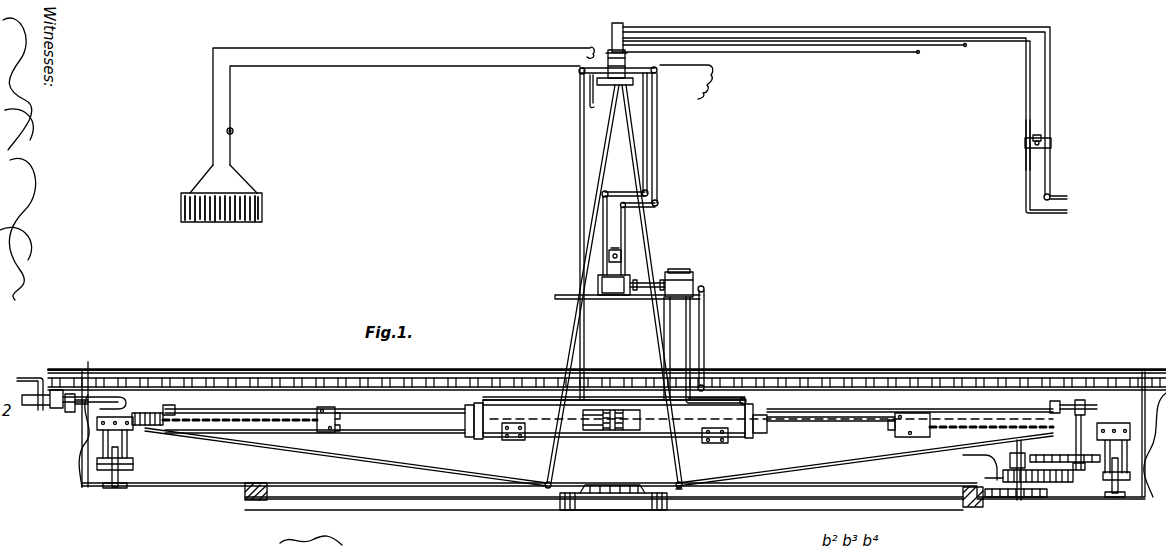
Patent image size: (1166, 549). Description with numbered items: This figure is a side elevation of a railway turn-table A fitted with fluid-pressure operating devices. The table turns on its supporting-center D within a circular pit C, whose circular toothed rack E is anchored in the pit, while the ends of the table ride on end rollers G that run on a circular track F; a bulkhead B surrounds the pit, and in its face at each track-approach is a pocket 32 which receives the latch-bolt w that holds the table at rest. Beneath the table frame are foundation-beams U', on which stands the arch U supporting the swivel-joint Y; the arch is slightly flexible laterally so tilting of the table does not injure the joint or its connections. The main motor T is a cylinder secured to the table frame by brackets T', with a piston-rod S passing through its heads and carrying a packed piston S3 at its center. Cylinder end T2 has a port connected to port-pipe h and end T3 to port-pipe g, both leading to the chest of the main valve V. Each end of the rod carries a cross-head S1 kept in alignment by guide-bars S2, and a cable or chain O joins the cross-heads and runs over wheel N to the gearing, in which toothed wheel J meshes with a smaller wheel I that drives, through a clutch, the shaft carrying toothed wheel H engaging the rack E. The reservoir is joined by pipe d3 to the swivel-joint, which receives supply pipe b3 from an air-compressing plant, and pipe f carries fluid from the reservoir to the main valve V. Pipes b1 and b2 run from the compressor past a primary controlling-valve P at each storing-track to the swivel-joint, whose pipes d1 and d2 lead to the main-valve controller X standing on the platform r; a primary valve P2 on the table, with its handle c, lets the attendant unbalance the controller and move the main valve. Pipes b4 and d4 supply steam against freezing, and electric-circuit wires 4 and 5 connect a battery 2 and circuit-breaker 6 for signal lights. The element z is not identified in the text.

The battery 2 is at (262, 210).
The electric-circuit wire 4 is at (368, 48).
The electric-circuit wire 5 is at (436, 80).
The circuit-breaker 6 is at (233, 129).
The terminal block z is at (612, 25).
The air pipe b1 is at (1058, 196).
The air pipe b2 is at (1060, 214).
The reservoir supply pipe b3 is at (966, 50).
The steam pipe b4 is at (917, 56).
The valve handle c is at (1038, 135).
The primary controlling-valve P is at (1027, 150).
The primary controlling-valve P2 is at (606, 257).
The swivel-joint pipe d1 is at (657, 148).
The swivel-joint pipe d2 is at (619, 192).
The reservoir pipe d3 is at (580, 151).
The steam pipe d4 is at (590, 101).
The swivel-joint Y is at (612, 88).
The arch U is at (579, 286).
The foundation-beams U' is at (672, 308).
The main-valve controller X is at (609, 290).
The main valve V is at (693, 281).
The platform r is at (553, 295).
The motor supply pipe f is at (706, 325).
The port-pipe g is at (722, 400).
The port-pipe h is at (495, 397).
The turn-table A is at (614, 433).
The main motor T is at (686, 446).
The brackets T' is at (512, 443).
The cylinder end T2 is at (478, 440).
The cylinder end T3 is at (756, 434).
The piston-rod S is at (806, 424).
The cross-head S1 is at (330, 425).
The guide-bars S2 is at (862, 432).
The piston S3 is at (614, 431).
The cable or chain O is at (943, 431).
The wheel N is at (151, 427).
The table end A' is at (88, 413).
The latch-bolt w is at (124, 404).
The pocket 32 is at (78, 404).
The bulkhead B is at (86, 436).
The end rollers G is at (120, 477).
The circular track F is at (118, 489).
The circular toothed rack E is at (245, 485).
The circular pit C is at (504, 510).
The supporting-center D is at (607, 506).
The toothed wheel H is at (1052, 484).
The toothed wheel J is at (1062, 484).
The toothed wheel I is at (992, 477).